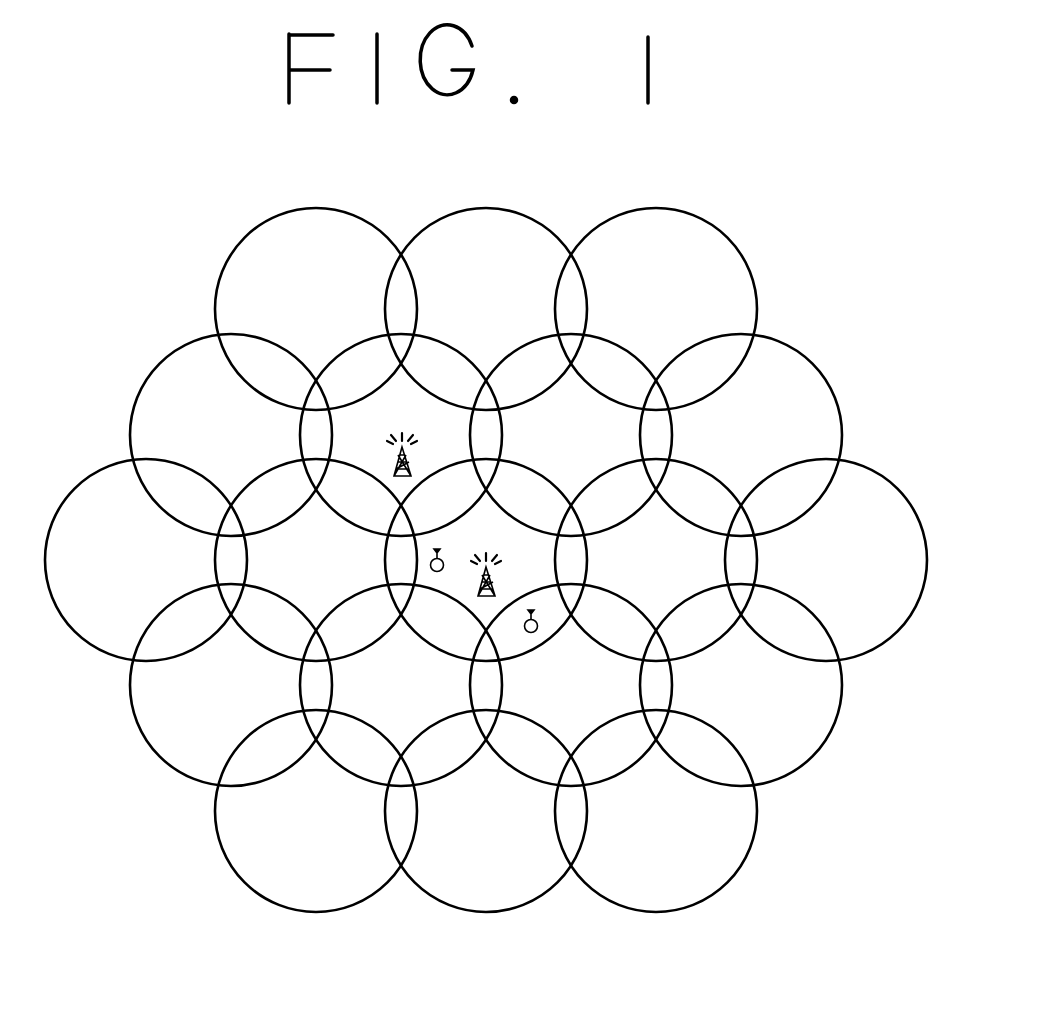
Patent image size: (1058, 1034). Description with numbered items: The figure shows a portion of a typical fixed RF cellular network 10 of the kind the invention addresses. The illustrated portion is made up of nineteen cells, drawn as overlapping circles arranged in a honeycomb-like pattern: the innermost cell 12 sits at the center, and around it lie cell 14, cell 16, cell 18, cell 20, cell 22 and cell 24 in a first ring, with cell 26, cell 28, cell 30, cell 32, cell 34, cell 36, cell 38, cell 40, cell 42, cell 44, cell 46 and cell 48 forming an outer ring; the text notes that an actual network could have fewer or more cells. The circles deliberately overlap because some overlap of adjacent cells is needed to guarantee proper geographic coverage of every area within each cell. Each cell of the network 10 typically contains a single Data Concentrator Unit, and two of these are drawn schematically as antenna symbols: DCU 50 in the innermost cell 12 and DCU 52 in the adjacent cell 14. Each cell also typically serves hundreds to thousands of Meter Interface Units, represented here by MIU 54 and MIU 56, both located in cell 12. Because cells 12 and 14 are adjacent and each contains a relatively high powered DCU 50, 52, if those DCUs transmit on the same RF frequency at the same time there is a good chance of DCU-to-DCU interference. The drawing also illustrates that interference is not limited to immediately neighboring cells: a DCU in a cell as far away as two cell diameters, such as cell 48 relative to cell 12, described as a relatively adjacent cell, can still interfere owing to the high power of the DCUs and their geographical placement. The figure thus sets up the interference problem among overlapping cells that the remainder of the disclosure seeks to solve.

The fixed RF cellular network 10 is at (741, 164).
The innermost cell 12 is at (470, 541).
The cell 14 is at (382, 414).
The cell 16 is at (553, 416).
The cell 18 is at (637, 567).
The cell 20 is at (560, 722).
The cell 22 is at (382, 691).
The cell 24 is at (273, 567).
The cell 26 is at (471, 316).
The cell 28 is at (641, 316).
The cell 30 is at (740, 444).
The cell 32 is at (825, 567).
The cell 34 is at (723, 694).
The cell 36 is at (637, 842).
The cell 38 is at (468, 842).
The cell 40 is at (298, 842).
The cell 42 is at (213, 714).
The cell 44 is at (110, 567).
The cell 46 is at (197, 444).
The cell 48 is at (301, 316).
The Data Concentrator Unit 50 is at (497, 587).
The Data Concentrator Unit 52 is at (412, 464).
The Meter Interface Unit 54 is at (430, 567).
The Meter Interface Unit 56 is at (538, 624).